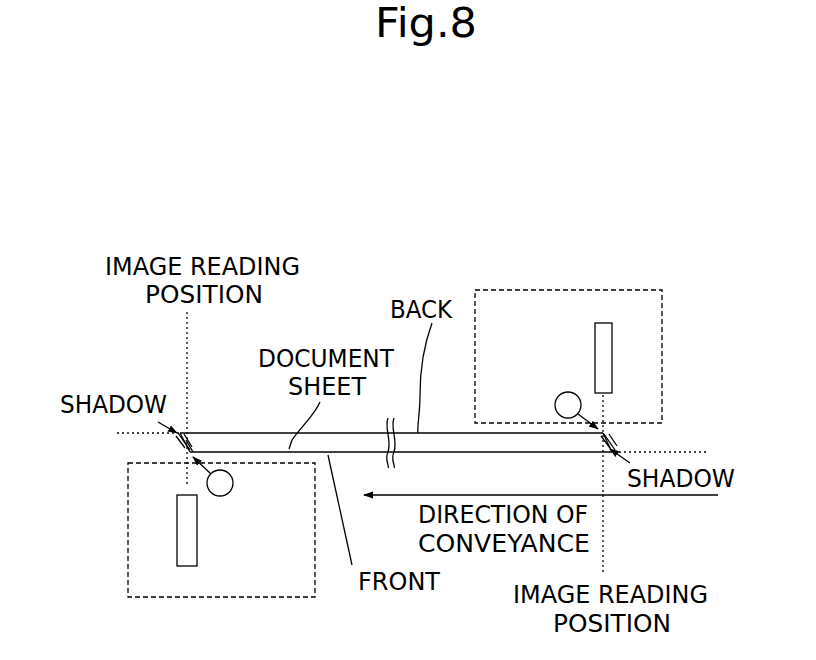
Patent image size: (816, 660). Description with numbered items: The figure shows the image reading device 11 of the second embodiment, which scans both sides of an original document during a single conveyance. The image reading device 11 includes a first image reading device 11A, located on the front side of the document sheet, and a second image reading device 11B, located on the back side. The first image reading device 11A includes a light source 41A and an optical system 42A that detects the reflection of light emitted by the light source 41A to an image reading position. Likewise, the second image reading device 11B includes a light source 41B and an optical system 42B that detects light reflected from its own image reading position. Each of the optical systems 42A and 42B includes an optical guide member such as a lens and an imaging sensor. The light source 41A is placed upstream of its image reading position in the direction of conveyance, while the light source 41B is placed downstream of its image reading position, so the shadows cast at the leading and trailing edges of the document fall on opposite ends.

The image reading device 11 is at (415, 160).
The first image reading device 11A is at (235, 600).
The second image reading device 11B is at (585, 290).
The light source 41A is at (230, 492).
The light source 41B is at (558, 395).
The optical system 42A is at (216, 536).
The optical system 42B is at (577, 348).